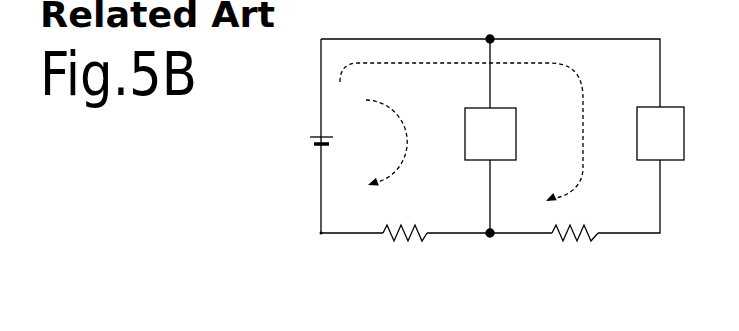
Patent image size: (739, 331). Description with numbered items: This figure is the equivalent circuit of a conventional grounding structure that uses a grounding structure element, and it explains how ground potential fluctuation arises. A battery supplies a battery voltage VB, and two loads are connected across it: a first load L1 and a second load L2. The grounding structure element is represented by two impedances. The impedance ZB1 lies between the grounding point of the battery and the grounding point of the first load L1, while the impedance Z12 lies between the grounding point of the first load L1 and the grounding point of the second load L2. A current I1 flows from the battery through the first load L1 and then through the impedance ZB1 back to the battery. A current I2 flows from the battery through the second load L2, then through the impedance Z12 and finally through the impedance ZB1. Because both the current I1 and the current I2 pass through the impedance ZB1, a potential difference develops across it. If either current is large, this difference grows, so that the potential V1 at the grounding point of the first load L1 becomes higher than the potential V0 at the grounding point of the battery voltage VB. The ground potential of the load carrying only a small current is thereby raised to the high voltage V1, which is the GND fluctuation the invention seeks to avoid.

The battery voltage VB is at (306, 142).
The first load L1 is at (490, 134).
The second load L2 is at (660, 133).
The impedance between battery grounding point and first load grounding point ZB1 is at (405, 252).
The impedance between first load grounding point and second load grounding point Z12 is at (575, 252).
The current of first load I1 is at (386, 142).
The current of second load I2 is at (461, 132).
The potential at battery grounding point V0 is at (320, 235).
The potential at first load grounding point V1 is at (488, 237).